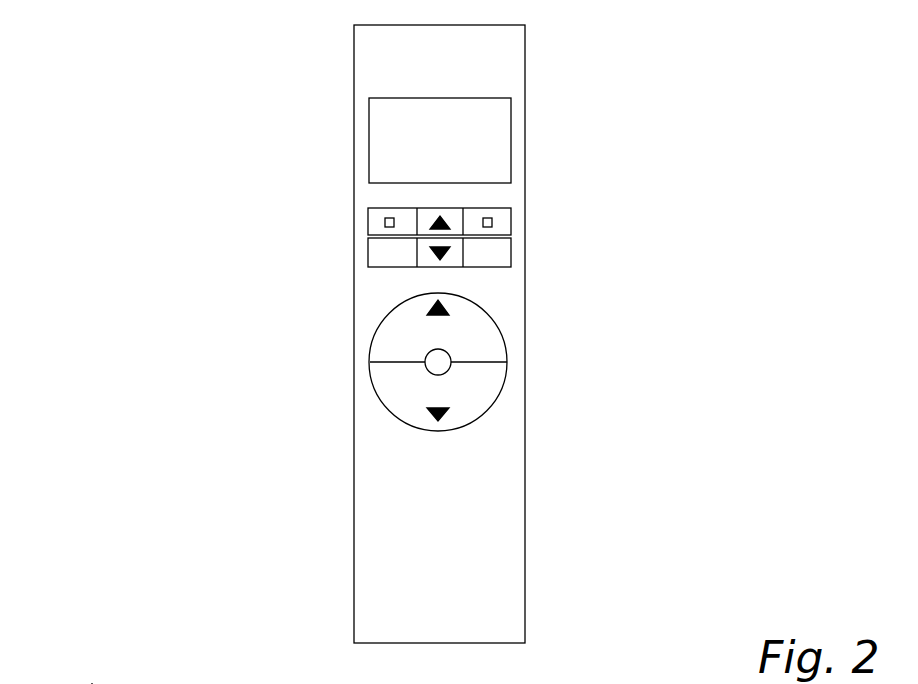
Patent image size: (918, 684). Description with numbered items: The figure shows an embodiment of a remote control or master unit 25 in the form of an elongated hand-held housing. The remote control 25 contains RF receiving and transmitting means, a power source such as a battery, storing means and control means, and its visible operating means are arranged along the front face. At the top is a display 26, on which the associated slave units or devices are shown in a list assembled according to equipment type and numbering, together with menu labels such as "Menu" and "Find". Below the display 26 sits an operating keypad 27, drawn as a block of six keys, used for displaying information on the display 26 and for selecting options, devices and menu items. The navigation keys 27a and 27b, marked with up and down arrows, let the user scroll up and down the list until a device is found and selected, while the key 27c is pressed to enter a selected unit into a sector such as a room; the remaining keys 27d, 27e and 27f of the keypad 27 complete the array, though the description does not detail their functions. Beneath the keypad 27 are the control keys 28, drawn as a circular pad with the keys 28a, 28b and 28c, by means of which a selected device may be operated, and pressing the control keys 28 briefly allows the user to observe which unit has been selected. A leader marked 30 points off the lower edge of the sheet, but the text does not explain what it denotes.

The remote control 25 is at (305, 385).
The display 26 is at (512, 117).
The operating keypad 27 is at (518, 232).
The navigation key 27a is at (418, 208).
The navigation key 27b is at (430, 267).
The key 27c is at (368, 217).
The right soft key button 27d is at (512, 210).
The P1 preset button 27e is at (368, 252).
The P2 preset button 27f is at (512, 260).
The control keys 28 is at (522, 356).
The key 28a is at (490, 314).
The key 28b is at (487, 412).
The key 28c is at (450, 370).
The operator / window covering (off sheet) 30 is at (92, 683).